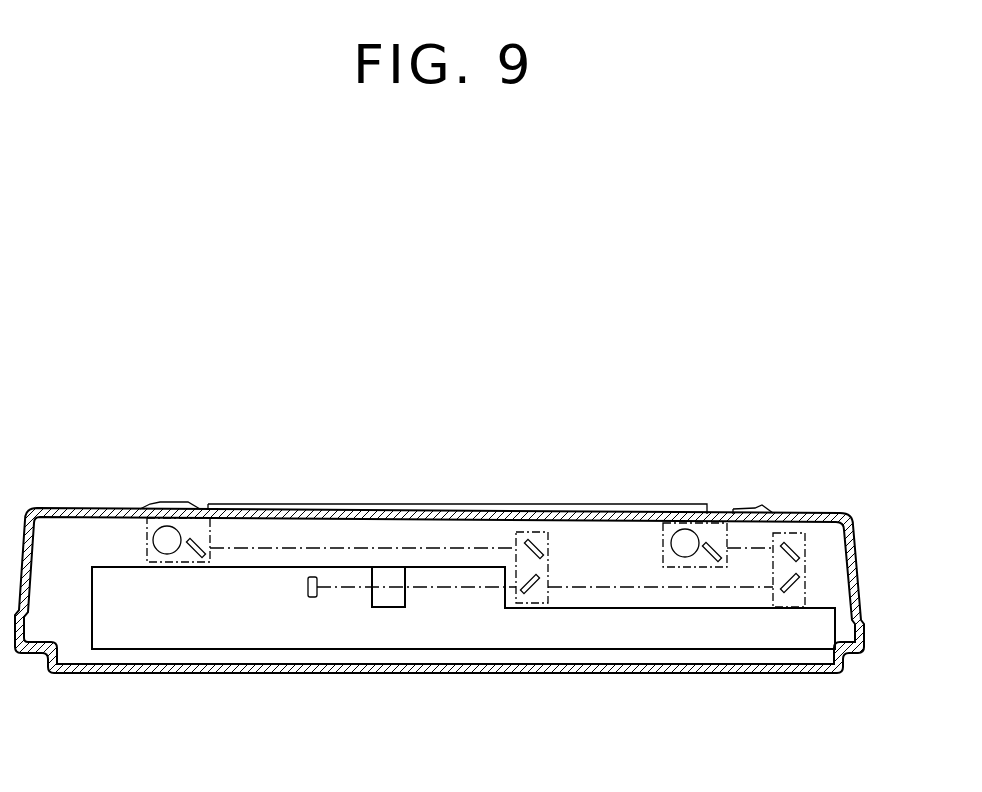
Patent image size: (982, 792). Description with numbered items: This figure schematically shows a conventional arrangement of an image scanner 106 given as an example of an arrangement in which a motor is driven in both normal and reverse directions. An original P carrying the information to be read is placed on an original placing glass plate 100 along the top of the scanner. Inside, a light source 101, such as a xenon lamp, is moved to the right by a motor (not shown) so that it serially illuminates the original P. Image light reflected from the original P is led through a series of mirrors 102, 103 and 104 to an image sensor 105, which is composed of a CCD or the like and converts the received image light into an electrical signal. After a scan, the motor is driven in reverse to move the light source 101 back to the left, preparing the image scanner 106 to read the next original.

The original placing glass plate 100 is at (722, 520).
The light source 101 is at (160, 536).
The mirror 102 is at (205, 547).
The mirror 103 is at (533, 542).
The mirror 104 is at (538, 592).
The image sensor 105 is at (319, 576).
The image scanner 106 is at (436, 499).
The original P is at (613, 519).